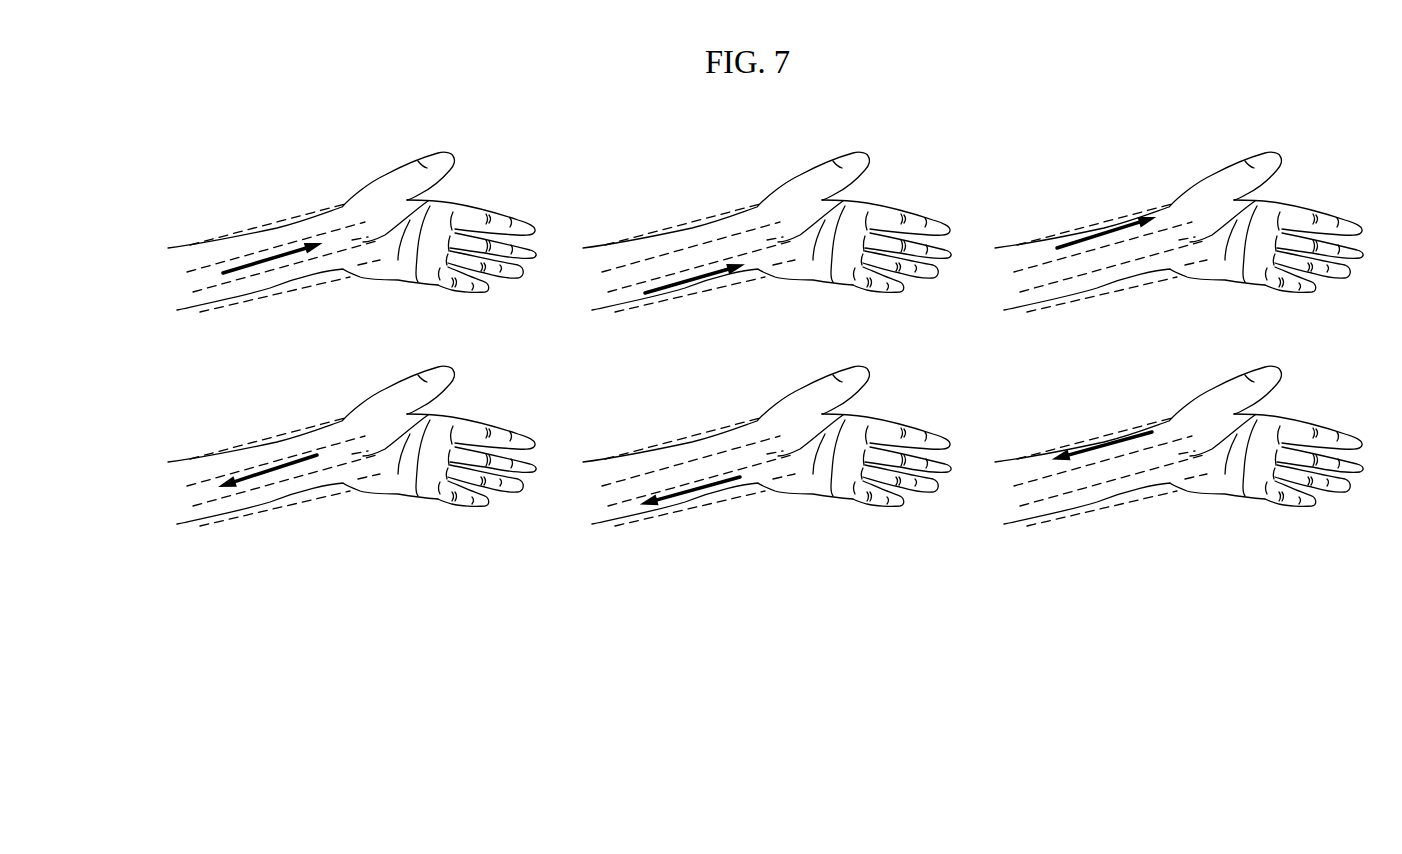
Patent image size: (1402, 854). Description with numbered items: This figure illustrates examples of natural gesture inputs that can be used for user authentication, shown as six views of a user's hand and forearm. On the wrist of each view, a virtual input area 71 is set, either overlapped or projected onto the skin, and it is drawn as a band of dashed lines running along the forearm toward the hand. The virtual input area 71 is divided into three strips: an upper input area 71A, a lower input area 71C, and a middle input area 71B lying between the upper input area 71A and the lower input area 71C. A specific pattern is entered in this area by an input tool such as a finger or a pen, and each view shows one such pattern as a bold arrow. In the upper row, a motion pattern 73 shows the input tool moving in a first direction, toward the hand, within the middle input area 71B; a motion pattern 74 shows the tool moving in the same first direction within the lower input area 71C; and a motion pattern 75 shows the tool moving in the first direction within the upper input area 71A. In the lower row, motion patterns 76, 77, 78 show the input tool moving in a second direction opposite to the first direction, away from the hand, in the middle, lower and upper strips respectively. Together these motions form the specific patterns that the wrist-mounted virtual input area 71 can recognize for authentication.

The virtual input area 71 is at (242, 241).
The upper input area 71A is at (197, 256).
The middle input area 71B is at (197, 281).
The lower input area 71C is at (220, 299).
The motion pattern 73 is at (295, 256).
The motion pattern 74 is at (713, 282).
The motion pattern 75 is at (1118, 222).
The motion pattern 76 is at (267, 478).
The motion pattern 77 is at (705, 493).
The motion pattern 78 is at (1130, 430).